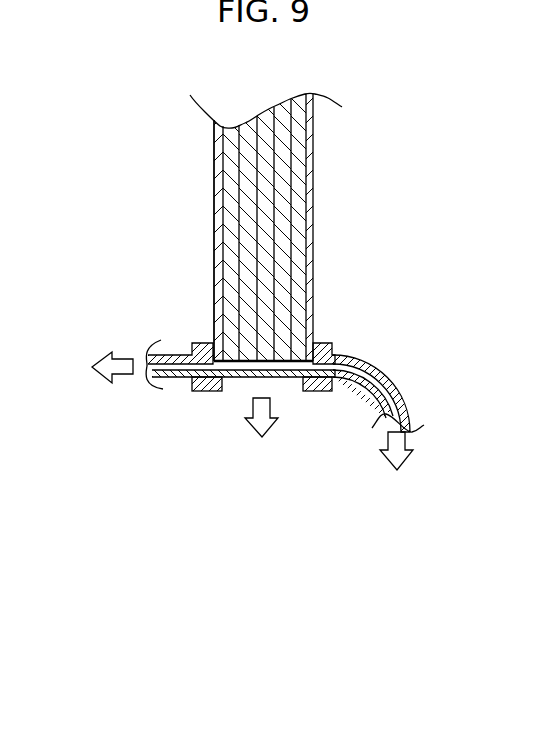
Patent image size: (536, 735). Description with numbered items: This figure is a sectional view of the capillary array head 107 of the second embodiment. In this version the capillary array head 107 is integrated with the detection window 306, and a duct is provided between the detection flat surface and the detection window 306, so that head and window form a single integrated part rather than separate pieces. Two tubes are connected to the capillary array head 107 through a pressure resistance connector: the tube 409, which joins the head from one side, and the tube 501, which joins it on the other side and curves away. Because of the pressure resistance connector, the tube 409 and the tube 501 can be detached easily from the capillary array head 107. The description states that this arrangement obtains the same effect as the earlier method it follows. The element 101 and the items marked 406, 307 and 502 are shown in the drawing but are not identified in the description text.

The fuel cell stack 101 is at (313, 140).
The capillary array head 107 is at (214, 140).
The tube 409 is at (173, 355).
The detection window 306 is at (227, 385).
The tube 501 is at (367, 362).
The exhaust flow direction 406 is at (83, 366).
The downward flow direction 307 is at (271, 435).
The outlet flow direction 502 is at (398, 468).